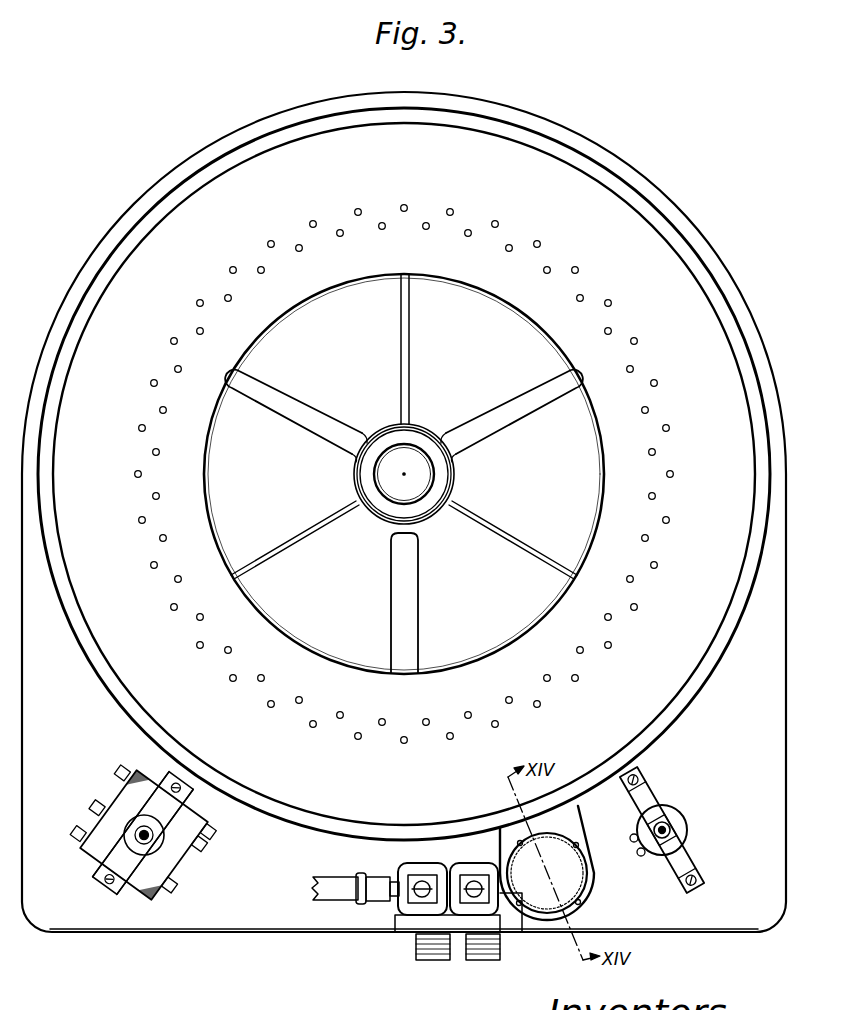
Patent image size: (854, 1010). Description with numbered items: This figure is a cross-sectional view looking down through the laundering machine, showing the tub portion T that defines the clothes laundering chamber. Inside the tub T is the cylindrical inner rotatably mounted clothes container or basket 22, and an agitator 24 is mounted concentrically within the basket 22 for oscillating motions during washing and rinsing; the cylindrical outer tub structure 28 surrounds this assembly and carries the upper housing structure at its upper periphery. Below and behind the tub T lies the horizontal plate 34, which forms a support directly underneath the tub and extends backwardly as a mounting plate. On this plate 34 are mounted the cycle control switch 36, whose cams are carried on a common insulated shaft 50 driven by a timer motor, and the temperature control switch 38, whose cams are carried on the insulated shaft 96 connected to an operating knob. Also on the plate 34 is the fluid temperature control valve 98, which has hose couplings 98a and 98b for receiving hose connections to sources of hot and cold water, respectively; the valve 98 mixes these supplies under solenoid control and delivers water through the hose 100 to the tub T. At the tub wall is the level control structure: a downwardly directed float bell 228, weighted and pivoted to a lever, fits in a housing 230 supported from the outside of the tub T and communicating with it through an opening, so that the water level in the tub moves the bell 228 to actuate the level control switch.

The tub portion T is at (720, 290).
The basket 22 is at (727, 611).
The agitator 24 is at (298, 399).
The cylindrical outer tub structure 28 is at (713, 673).
The horizontal plate 34 is at (143, 861).
The cycle control switch 36 is at (117, 813).
The insulated shaft 50 is at (152, 842).
The temperature control switch 38 is at (677, 812).
The insulated shaft 96 is at (670, 829).
The fluid temperature control valve 98 is at (414, 918).
The hose coupling 98a is at (420, 962).
The hose coupling 98b is at (478, 960).
The hose 100 is at (334, 883).
The float bell 228 is at (593, 897).
The housing 230 is at (598, 851).